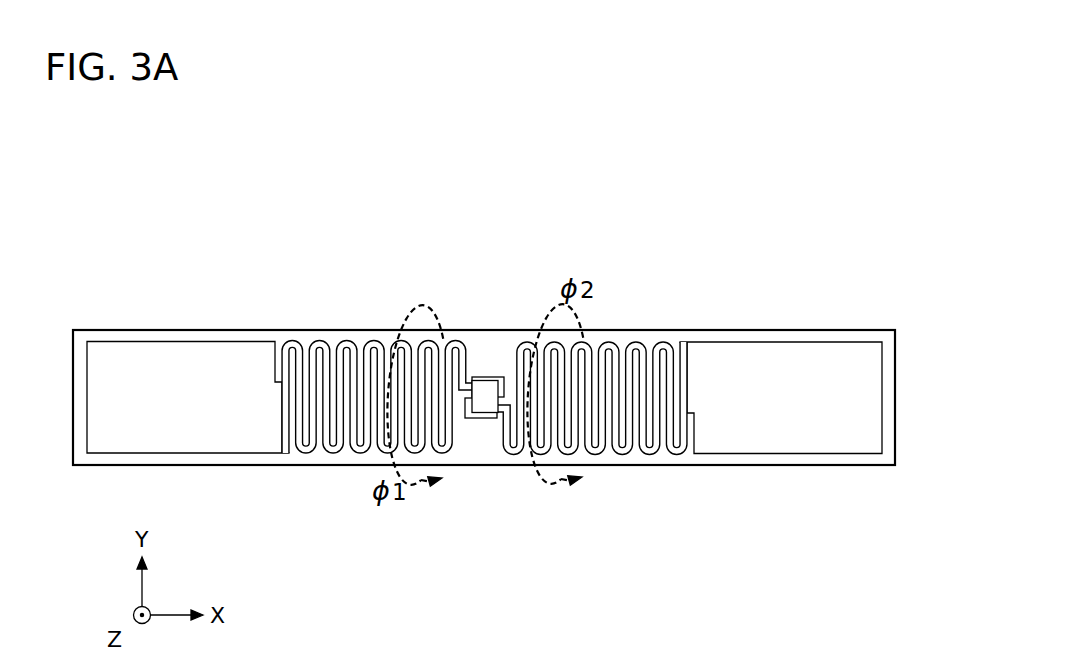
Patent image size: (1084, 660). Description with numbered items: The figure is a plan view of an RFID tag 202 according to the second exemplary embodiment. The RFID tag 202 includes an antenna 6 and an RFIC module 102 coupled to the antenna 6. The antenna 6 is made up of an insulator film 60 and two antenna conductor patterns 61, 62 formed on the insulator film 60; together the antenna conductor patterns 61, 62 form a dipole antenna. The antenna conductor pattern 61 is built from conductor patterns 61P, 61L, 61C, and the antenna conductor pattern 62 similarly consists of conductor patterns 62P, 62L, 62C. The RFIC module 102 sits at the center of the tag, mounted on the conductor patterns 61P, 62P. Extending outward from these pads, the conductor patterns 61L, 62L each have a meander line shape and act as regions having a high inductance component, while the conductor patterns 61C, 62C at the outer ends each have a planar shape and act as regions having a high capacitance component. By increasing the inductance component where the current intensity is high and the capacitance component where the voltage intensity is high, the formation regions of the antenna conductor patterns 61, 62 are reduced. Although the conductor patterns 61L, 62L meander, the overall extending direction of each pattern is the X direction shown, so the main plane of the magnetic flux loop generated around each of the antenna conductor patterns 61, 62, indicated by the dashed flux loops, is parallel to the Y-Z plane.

The antenna 6 is at (859, 282).
The insulator film 60 is at (893, 393).
The RFID tag 202 is at (202, 174).
The antenna conductor pattern 61 is at (500, 258).
The conductor pattern 61C is at (177, 355).
The conductor pattern 61L is at (372, 343).
The conductor pattern 61P is at (482, 379).
The antenna conductor pattern 62 is at (823, 535).
The conductor pattern 62C is at (796, 436).
The conductor pattern 62L is at (596, 452).
The conductor pattern 62P is at (488, 414).
The RFIC module 102 is at (490, 383).